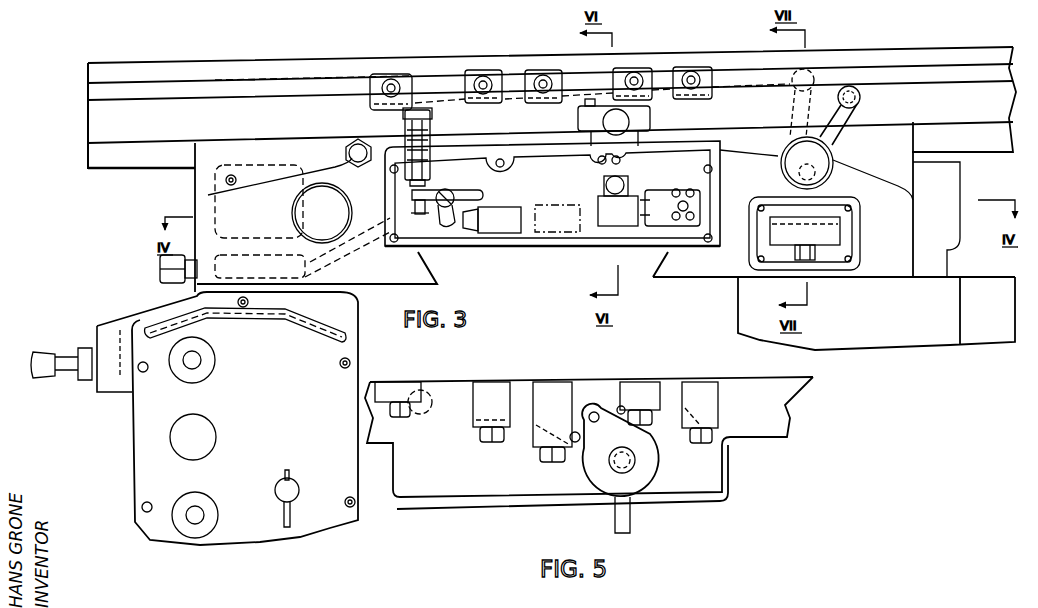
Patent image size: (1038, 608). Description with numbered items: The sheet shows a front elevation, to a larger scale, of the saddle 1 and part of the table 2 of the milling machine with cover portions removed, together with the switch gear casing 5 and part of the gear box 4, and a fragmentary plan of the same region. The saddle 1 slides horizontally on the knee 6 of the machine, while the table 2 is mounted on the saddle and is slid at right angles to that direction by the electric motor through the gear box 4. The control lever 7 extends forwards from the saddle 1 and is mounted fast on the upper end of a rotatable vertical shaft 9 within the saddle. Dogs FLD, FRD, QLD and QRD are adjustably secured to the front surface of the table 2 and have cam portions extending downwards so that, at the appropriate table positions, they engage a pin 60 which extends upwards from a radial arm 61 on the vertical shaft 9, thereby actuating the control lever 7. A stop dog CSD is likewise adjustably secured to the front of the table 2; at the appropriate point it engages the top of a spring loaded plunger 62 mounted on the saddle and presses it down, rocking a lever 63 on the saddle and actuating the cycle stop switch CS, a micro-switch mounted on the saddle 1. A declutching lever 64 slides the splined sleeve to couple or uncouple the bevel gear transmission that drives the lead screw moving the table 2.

In FIG. 3, the saddle 1 is at (902, 142).
In FIG. 3, the table 2 is at (912, 56).
In FIG. 3, the gear box 4 is at (895, 335).
In FIG. 3, the casing 5 is at (155, 478).
In FIG. 3, the knee 6 is at (540, 326).
In FIG. 3, the control lever 7 is at (626, 123).
In FIG. 5, the control lever 7 is at (630, 522).
In FIG. 5, the vertical shaft 9 is at (632, 461).
In FIG. 3, the pin 60 is at (589, 102).
In FIG. 5, the pin 60 is at (594, 412).
In FIG. 3, the radial arm 61 is at (580, 120).
In FIG. 5, the radial arm 61 is at (596, 452).
In FIG. 3, the spring loaded plunger 62 is at (436, 146).
In FIG. 3, the lever 63 is at (450, 225).
In FIG. 3, the declutching lever 64 is at (860, 98).
In FIG. 3, the cycle stop switch CS is at (512, 225).
In FIG. 3, the stop dog CSD is at (405, 74).
In FIG. 5, the stop dog CSD is at (395, 392).
In FIG. 3, the dog QLD is at (470, 76).
In FIG. 5, the dog QLD is at (486, 392).
In FIG. 3, the dog FRD is at (530, 76).
In FIG. 5, the dog FRD is at (552, 392).
In FIG. 3, the dog FLD is at (646, 72).
In FIG. 5, the dog FLD is at (640, 392).
In FIG. 3, the dog QRD is at (714, 98).
In FIG. 5, the dog QRD is at (695, 392).